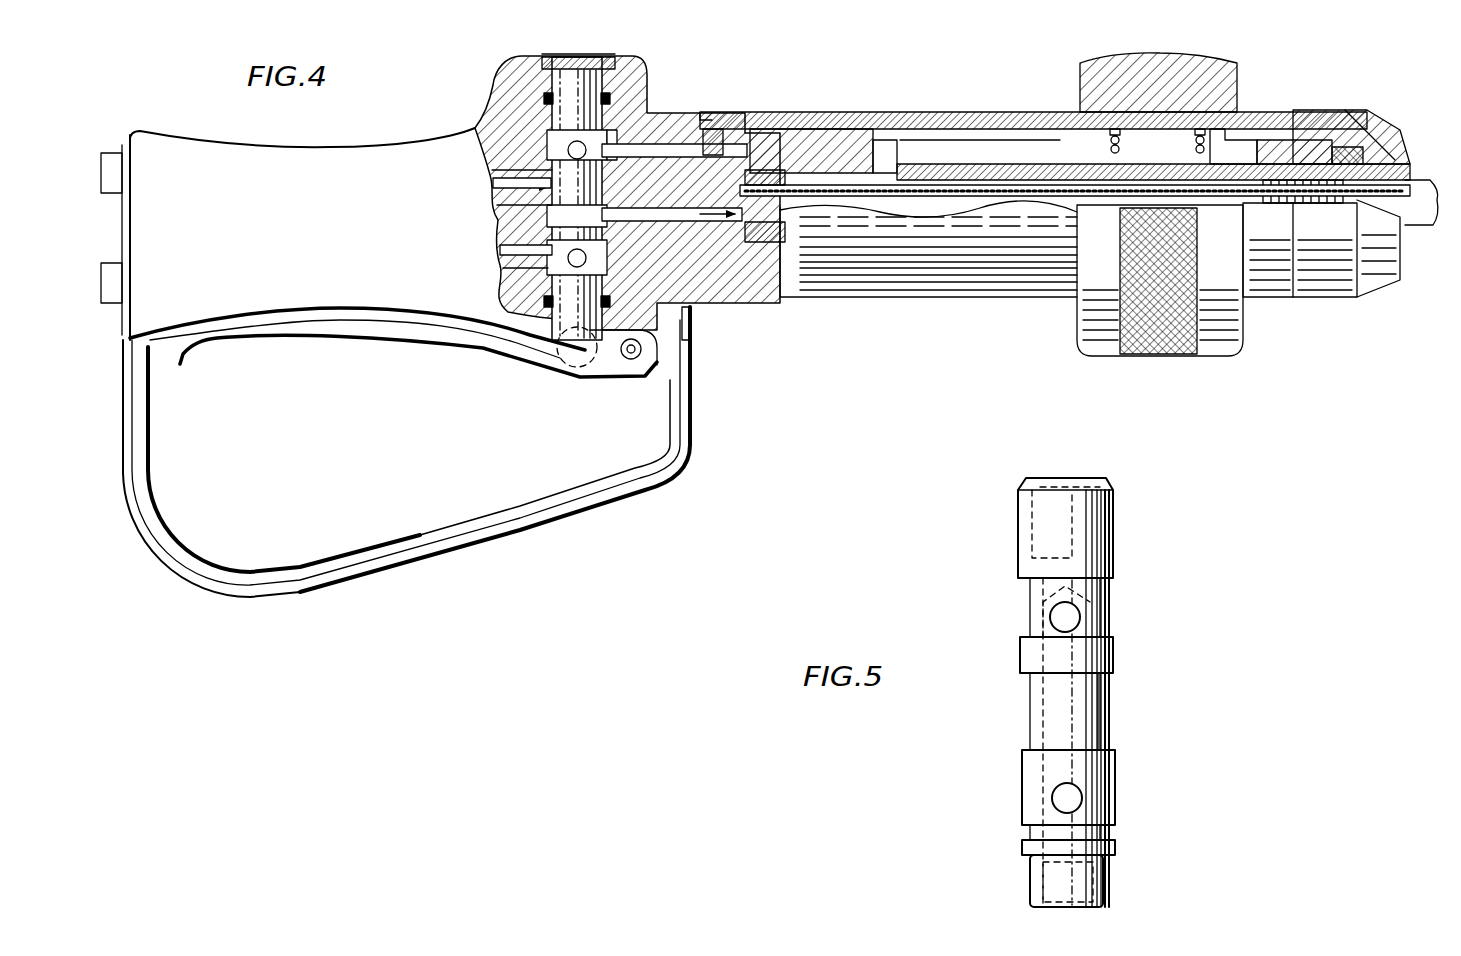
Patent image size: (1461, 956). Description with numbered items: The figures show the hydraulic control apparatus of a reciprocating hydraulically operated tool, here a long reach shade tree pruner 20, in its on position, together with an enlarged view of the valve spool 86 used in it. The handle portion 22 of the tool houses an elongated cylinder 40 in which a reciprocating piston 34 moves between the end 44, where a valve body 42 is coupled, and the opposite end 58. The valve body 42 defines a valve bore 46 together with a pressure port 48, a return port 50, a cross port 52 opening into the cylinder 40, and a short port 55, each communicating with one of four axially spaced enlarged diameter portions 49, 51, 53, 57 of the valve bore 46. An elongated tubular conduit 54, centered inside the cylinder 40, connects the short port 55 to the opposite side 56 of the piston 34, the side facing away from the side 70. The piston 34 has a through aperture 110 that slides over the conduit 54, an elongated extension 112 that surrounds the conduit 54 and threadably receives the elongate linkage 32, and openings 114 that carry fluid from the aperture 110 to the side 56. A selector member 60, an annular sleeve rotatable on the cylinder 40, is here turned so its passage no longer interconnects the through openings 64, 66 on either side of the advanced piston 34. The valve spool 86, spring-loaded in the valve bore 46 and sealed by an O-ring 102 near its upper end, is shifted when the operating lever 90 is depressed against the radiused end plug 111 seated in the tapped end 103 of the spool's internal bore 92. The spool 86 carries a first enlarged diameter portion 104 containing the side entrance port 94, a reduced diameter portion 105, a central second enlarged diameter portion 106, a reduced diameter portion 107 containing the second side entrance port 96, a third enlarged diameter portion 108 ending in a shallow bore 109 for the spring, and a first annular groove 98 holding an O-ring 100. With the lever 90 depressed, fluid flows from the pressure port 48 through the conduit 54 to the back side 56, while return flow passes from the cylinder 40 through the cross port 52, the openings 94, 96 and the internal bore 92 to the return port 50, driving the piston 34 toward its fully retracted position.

In FIG. 4, the long reach shade tree pruner 20 is at (722, 420).
In FIG. 4, the handle portion 22 is at (833, 325).
In FIG. 4, the elongate linkage 32 is at (1416, 176).
In FIG. 4, the reciprocating piston 34 is at (830, 150).
In FIG. 4, the elongated cylinder 40 is at (863, 118).
In FIG. 4, the valve body 42 is at (730, 308).
In FIG. 4, the end of the cylinder 44 is at (713, 118).
In FIG. 4, the valve bore 46 is at (545, 62).
In FIG. 4, the pressure port 48 is at (520, 165).
In FIG. 4, the enlarged diameter portion 49 is at (515, 183).
In FIG. 4, the return port 50 is at (525, 252).
In FIG. 4, the enlarged diameter portion 51 is at (545, 268).
In FIG. 4, the cross port 52 is at (738, 132).
In FIG. 4, the enlarged diameter portion 53 is at (568, 147).
In FIG. 4, the elongated tubular conduit 54 is at (958, 203).
In FIG. 4, the short port 55 is at (692, 315).
In FIG. 4, the opposite side of the piston 56 is at (882, 118).
In FIG. 4, the enlarged diameter portion 57 is at (540, 210).
In FIG. 4, the opposite end of the cylinder 58 is at (1293, 112).
In FIG. 4, the selector member 60 is at (1230, 63).
In FIG. 4, the through opening 64 is at (1103, 107).
In FIG. 4, the through opening 66 is at (1240, 110).
In FIG. 4, the side of the piston 70 is at (757, 142).
In FIG. 4, the valve spool 86 is at (640, 75).
In FIG. 5, the valve spool 86 is at (1008, 547).
In FIG. 4, the operating lever 90 is at (238, 345).
In FIG. 4, the internal bore 92 is at (500, 226).
In FIG. 5, the internal bore 92 is at (1030, 718).
In FIG. 4, the side entrance port 94 is at (643, 108).
In FIG. 5, the side entrance port 94 is at (1065, 797).
In FIG. 4, the side entrance port 96 is at (550, 270).
In FIG. 5, the side entrance port 96 is at (1075, 618).
In FIG. 5, the first annular groove 98 is at (1112, 840).
In FIG. 4, the O-ring 100 is at (548, 300).
In FIG. 4, the O-ring 102 is at (545, 97).
In FIG. 5, the tapped end 103 is at (1110, 880).
In FIG. 5, the enlarged diameter portion 104 is at (1117, 763).
In FIG. 5, the reduced diameter portion 105 is at (1103, 687).
In FIG. 5, the second enlarged diameter portion 106 is at (1020, 660).
In FIG. 5, the reduced diameter portion 107 is at (1030, 595).
In FIG. 5, the third enlarged diameter portion 108 is at (1018, 513).
In FIG. 5, the shallow bore 109 is at (1040, 487).
In FIG. 4, the through aperture 110 is at (867, 203).
In FIG. 4, the end plug 111 is at (590, 370).
In FIG. 4, the elongated extension 112 is at (1062, 158).
In FIG. 4, the openings 114 is at (945, 137).